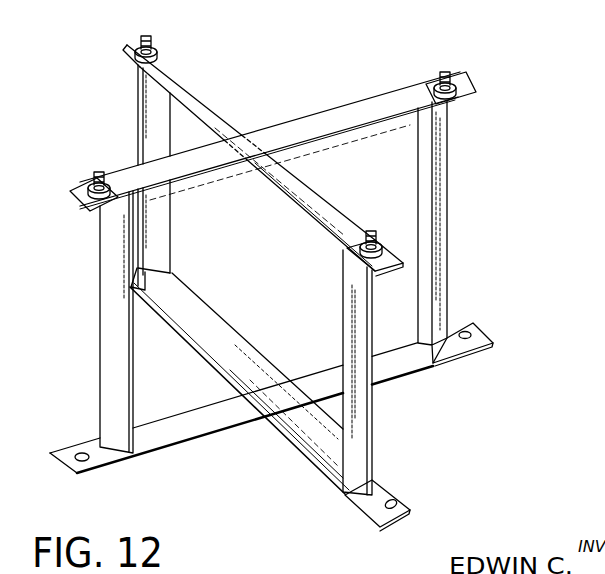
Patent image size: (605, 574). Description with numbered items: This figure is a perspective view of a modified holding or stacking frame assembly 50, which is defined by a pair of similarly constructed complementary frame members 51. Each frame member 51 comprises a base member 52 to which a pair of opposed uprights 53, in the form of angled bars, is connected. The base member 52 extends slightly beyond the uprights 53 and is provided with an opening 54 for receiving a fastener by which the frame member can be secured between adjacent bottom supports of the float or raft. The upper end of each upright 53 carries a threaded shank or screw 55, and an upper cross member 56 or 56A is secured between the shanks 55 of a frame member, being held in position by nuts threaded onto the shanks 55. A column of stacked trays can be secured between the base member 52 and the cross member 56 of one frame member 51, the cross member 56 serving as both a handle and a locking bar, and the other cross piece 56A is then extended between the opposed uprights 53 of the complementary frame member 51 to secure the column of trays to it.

The stacking frame assembly 50 is at (527, 182).
The frame member 51 is at (174, 411).
The base member 52 is at (217, 331).
The upright 53 is at (448, 138).
The opening 54 is at (135, 262).
The threaded shank 55 is at (149, 36).
The upper cross member 56 is at (320, 193).
The upper cross member 56A is at (308, 118).